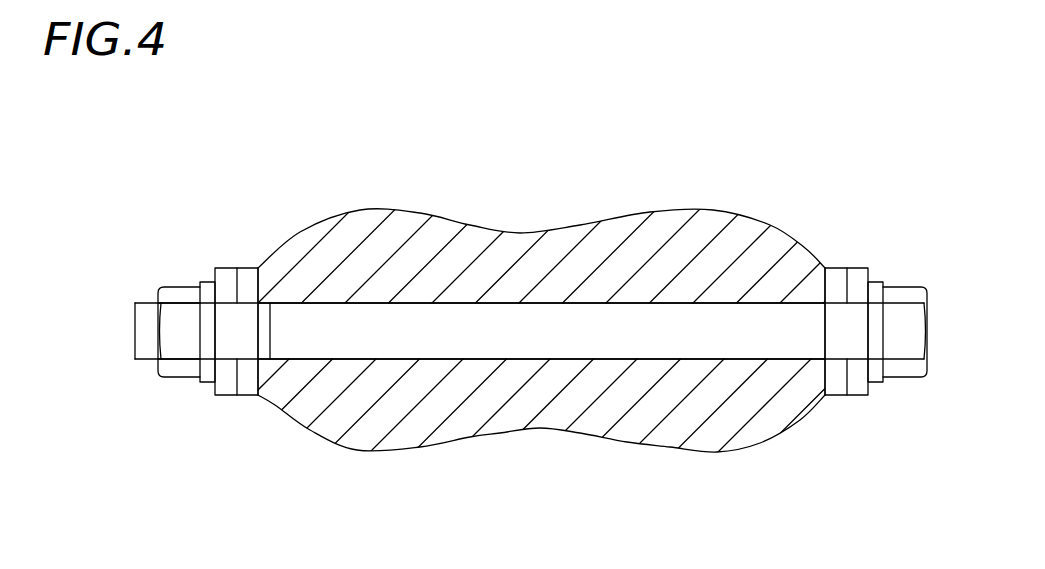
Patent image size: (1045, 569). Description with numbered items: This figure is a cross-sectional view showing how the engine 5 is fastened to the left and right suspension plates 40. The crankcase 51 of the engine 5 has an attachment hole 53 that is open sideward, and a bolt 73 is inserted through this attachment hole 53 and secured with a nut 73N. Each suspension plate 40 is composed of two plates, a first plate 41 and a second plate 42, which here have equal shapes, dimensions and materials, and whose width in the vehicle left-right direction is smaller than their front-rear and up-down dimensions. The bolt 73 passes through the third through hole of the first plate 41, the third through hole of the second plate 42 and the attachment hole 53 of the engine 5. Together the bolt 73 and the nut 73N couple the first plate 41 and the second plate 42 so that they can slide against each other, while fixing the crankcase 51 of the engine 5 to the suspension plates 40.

The engine 5 is at (514, 313).
The crankcase 51 is at (537, 232).
The attachment hole 53 is at (501, 363).
The bolt 73 is at (588, 333).
The nut 73N is at (175, 379).
The suspension plate 40 is at (543, 247).
The first plate 41 is at (228, 268).
The second plate 42 is at (256, 268).